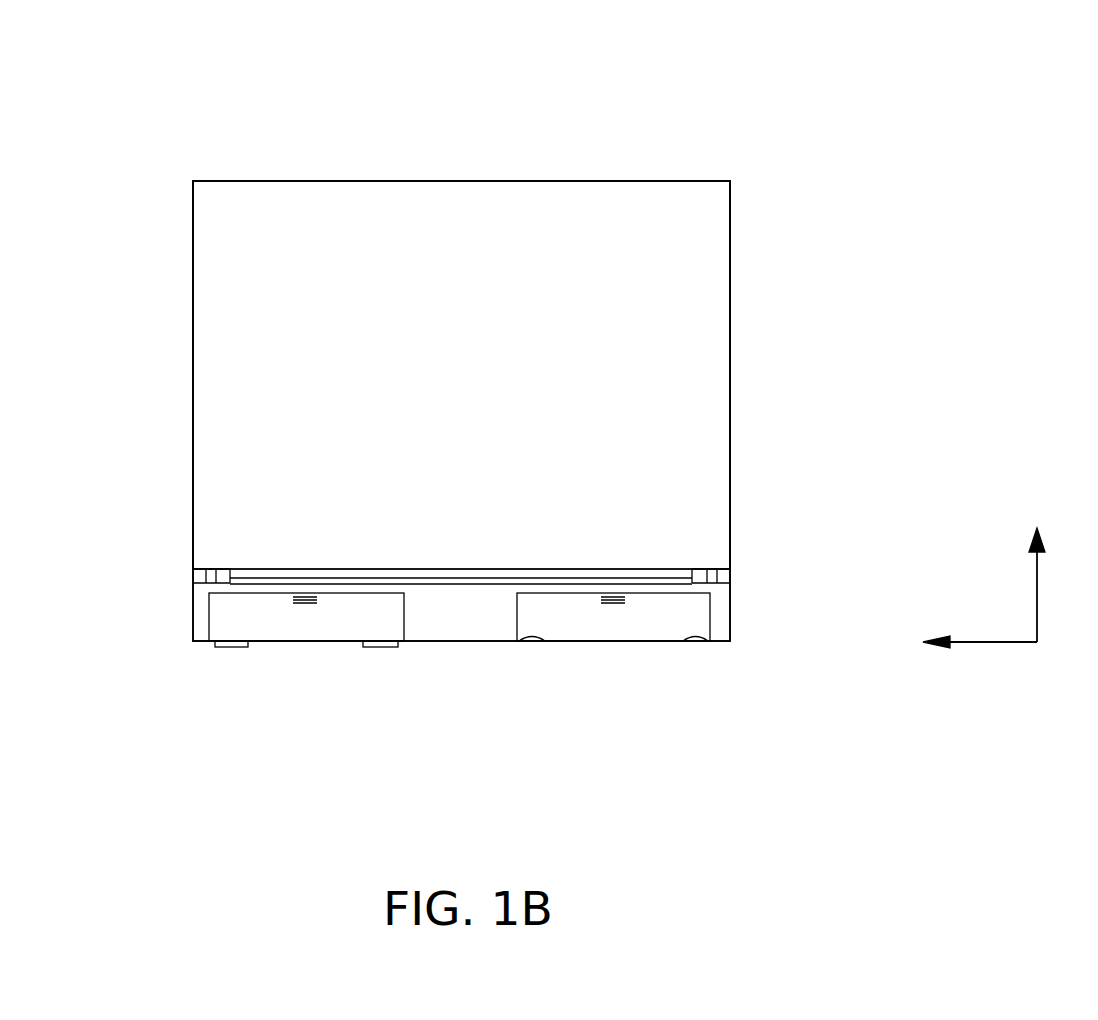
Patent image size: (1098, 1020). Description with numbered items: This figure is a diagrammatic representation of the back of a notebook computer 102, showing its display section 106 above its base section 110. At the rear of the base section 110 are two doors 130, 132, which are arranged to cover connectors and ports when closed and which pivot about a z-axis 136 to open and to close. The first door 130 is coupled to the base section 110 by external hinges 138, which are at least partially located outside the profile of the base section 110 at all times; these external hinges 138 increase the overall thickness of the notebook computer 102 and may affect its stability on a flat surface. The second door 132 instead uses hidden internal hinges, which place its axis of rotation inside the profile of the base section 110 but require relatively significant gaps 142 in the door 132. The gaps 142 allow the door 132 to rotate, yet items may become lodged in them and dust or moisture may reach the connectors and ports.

The notebook computer 102 is at (820, 153).
The display section 106 is at (707, 410).
The base section 110 is at (730, 610).
The door 130 is at (302, 632).
The door 132 is at (608, 640).
The z-axis 136 is at (1008, 642).
The external hinges 138 is at (228, 648).
The gaps 142 is at (528, 643).